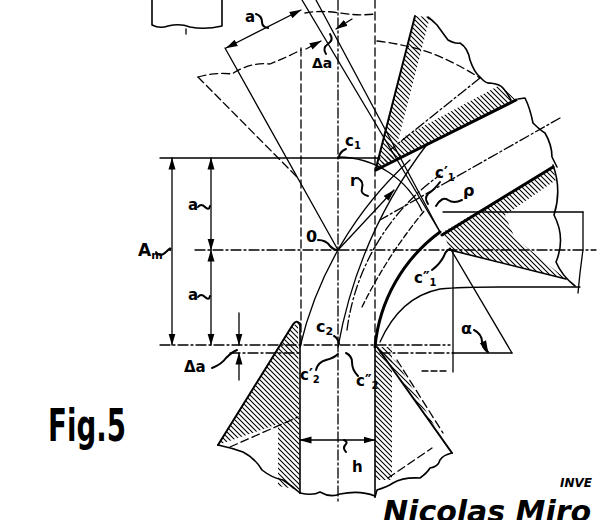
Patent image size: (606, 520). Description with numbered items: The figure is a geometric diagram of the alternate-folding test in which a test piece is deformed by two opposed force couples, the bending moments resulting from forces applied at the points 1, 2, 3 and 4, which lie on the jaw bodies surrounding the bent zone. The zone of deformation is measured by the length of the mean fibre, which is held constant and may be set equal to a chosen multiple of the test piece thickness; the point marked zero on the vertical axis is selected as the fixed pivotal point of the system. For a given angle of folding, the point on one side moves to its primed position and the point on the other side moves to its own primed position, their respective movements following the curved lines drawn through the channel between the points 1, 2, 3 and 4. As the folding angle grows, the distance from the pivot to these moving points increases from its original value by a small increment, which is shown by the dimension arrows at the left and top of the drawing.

The force application point 1 is at (385, 349).
The force application point 2 is at (438, 230).
The force application point 3 is at (300, 440).
The force application point 4 is at (507, 104).